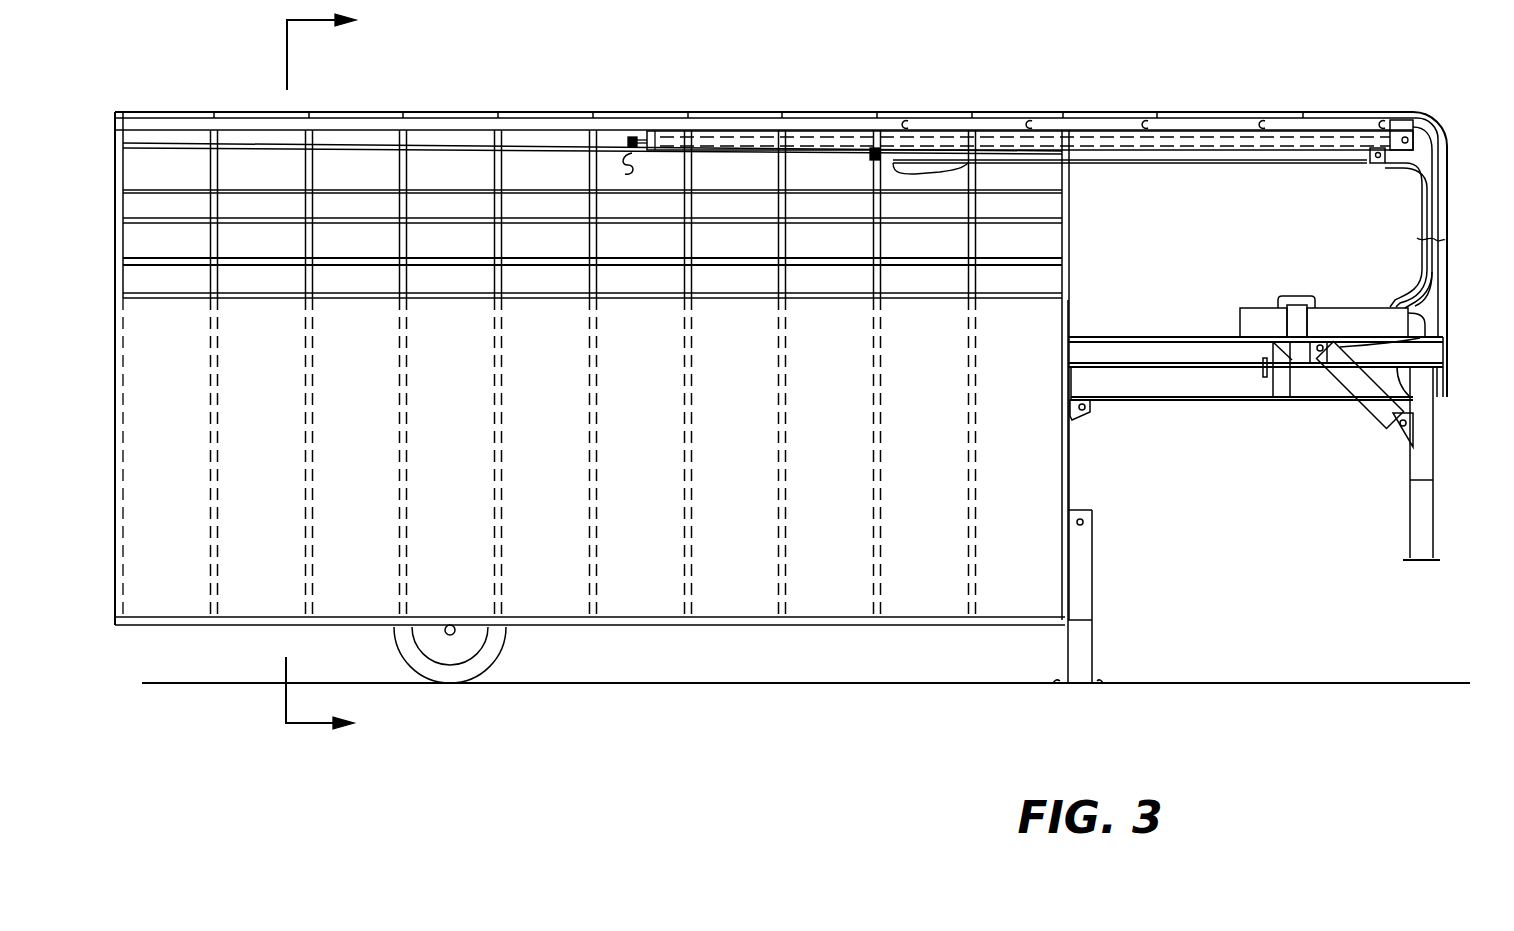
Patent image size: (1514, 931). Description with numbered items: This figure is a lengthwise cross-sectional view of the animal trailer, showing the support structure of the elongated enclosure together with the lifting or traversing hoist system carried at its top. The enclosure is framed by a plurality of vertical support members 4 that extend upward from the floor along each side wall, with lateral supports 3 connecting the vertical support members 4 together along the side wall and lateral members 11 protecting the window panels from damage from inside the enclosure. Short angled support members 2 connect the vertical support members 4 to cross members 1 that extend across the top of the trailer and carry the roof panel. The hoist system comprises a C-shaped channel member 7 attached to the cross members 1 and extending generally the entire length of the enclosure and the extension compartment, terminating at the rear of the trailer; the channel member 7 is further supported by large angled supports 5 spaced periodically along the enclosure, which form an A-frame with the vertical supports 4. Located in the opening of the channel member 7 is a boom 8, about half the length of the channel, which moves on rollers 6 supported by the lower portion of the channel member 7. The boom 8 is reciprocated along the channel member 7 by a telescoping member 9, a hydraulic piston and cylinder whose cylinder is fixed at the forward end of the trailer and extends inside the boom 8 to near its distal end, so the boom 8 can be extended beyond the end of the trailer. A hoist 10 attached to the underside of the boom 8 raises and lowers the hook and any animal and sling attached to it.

The cross members 1 is at (973, 112).
The short angled support members 2 is at (339, 372).
The lateral supports 3 is at (172, 143).
The vertical support members 4 is at (871, 177).
The large angled supports 5 is at (402, 163).
The rollers 6 is at (1150, 112).
The C-shaped channel member 7 is at (428, 122).
The boom 8 is at (1143, 155).
The telescoping member 9 is at (1396, 146).
The hoist 10 is at (1355, 122).
The lateral members 11 is at (262, 260).